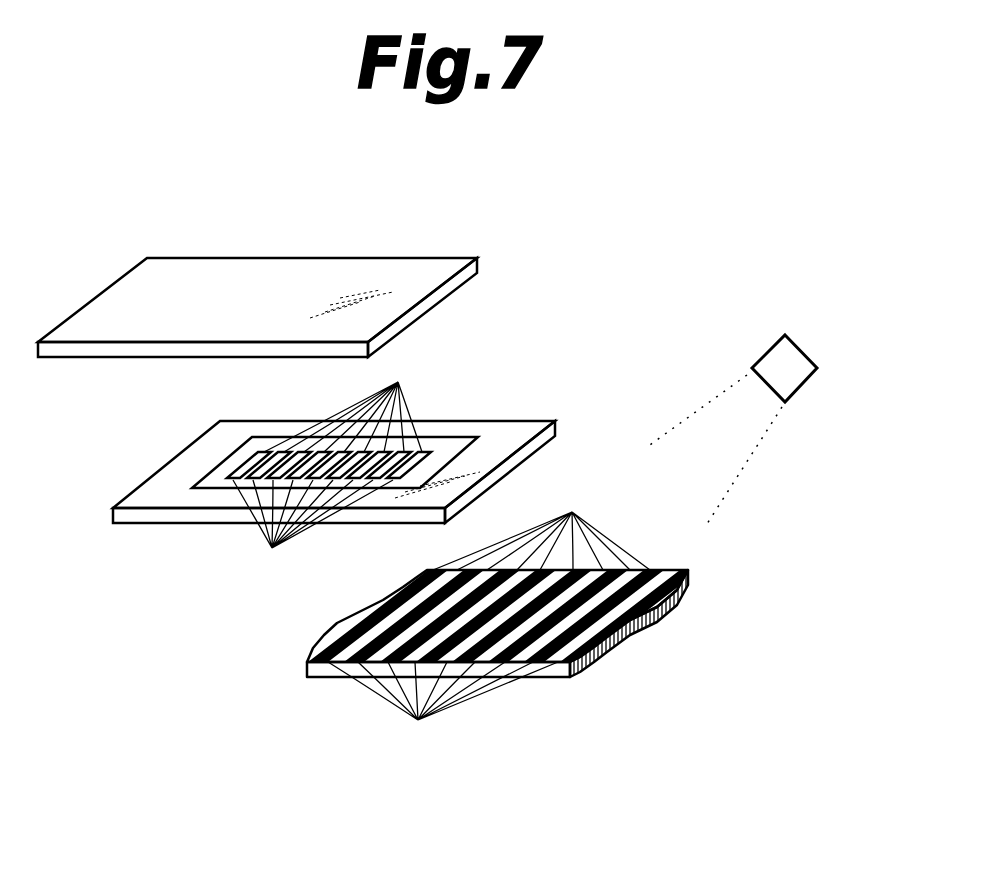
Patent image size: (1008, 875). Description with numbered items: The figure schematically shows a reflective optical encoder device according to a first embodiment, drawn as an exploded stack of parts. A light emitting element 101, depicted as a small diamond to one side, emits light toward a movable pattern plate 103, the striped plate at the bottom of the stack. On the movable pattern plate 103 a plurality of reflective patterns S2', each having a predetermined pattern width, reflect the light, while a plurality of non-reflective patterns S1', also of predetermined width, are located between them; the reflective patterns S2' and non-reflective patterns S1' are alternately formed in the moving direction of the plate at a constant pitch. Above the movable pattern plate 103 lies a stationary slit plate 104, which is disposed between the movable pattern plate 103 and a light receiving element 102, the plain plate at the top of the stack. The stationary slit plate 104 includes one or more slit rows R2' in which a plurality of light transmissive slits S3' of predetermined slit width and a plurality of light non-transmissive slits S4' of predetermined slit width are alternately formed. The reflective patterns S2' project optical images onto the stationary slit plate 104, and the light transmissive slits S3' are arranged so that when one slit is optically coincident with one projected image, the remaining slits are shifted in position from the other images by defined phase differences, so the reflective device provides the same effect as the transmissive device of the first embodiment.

The light emitting element 101 is at (813, 377).
The light receiving element 102 is at (383, 255).
The movable pattern plate 103 is at (675, 623).
The stationary slit plate 104 is at (502, 420).
The slit row R2' is at (279, 453).
The non-reflective pattern S1' is at (541, 527).
The reflective pattern S2' is at (443, 709).
The light transmissive slit S3' is at (313, 533).
The light non-transmissive slit S4' is at (346, 401).